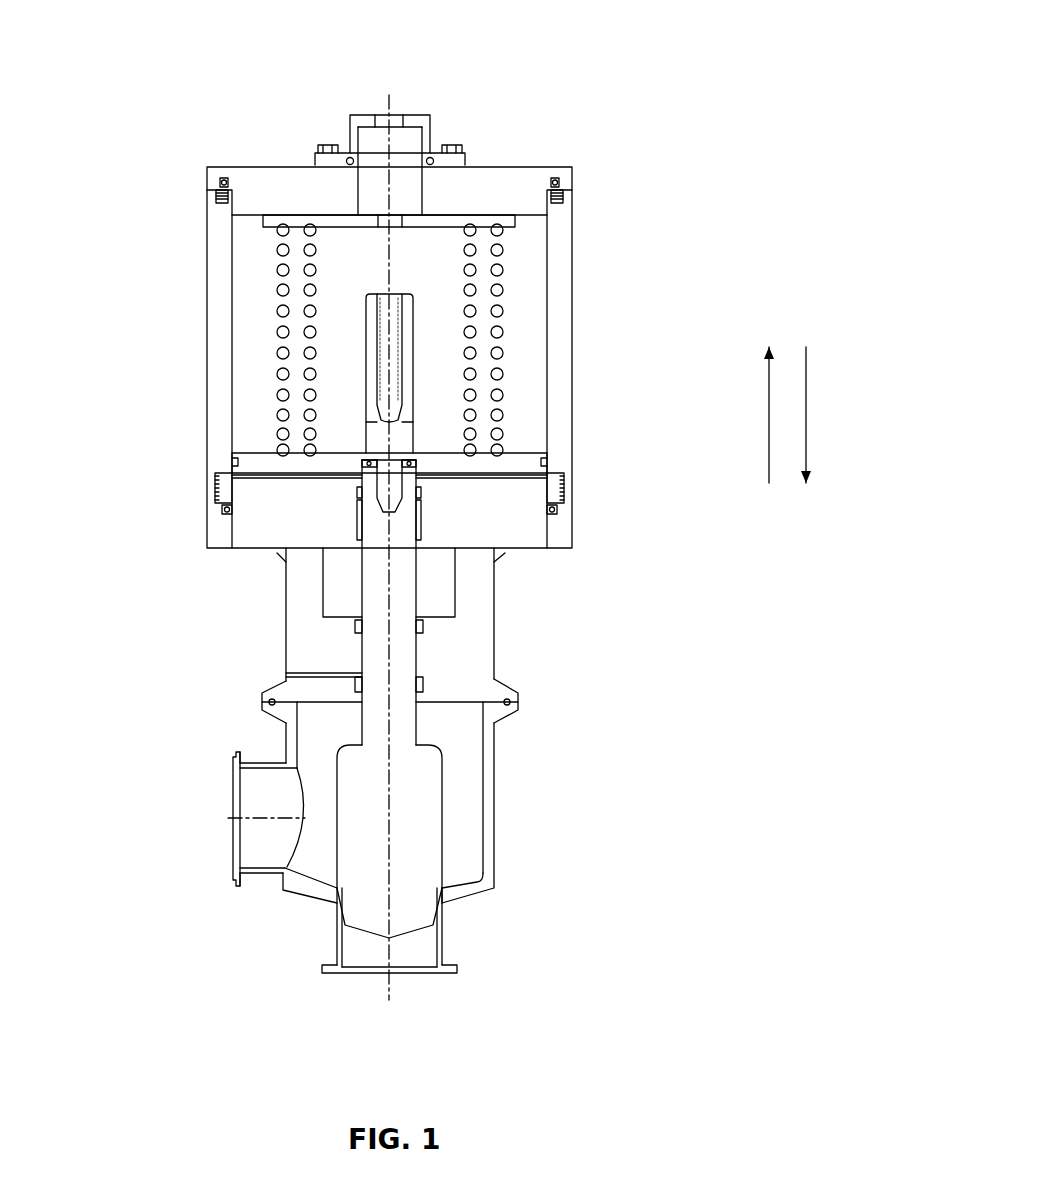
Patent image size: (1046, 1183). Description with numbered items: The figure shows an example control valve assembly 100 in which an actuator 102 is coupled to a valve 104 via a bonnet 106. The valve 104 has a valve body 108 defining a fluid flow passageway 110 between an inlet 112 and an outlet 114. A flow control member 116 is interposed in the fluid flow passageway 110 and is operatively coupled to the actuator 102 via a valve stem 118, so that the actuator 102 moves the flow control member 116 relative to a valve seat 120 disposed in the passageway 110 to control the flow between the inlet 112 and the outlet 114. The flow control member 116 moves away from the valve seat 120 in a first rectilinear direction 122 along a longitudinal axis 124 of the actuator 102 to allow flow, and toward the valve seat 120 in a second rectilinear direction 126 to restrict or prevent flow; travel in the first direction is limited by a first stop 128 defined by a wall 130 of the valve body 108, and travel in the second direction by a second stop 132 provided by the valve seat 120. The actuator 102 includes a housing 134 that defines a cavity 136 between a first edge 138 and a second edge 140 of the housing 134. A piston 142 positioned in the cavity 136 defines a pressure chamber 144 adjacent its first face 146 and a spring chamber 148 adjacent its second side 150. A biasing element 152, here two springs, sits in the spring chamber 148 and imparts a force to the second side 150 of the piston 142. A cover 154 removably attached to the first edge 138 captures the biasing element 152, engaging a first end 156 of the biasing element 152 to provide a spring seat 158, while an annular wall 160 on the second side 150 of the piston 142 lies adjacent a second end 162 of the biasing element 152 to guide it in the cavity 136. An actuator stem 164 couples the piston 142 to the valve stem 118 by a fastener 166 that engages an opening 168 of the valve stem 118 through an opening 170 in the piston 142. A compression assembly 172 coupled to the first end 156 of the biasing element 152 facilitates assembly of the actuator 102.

The control valve assembly 100 is at (587, 57).
The actuator 102 is at (155, 263).
The valve 104 is at (227, 720).
The bonnet 106 is at (286, 647).
The valve body 108 is at (494, 810).
The fluid flow passageway 110 is at (317, 850).
The inlet 112 is at (237, 850).
The outlet 114 is at (415, 975).
The flow control member 116 is at (443, 788).
The valve stem 118 is at (363, 587).
The valve seat 120 is at (335, 890).
The first rectilinear direction 122 is at (769, 405).
The longitudinal axis 124 is at (390, 153).
The second rectilinear direction 126 is at (806, 407).
The first stop 128 is at (438, 702).
The wall 130 is at (463, 702).
The second stop 132 is at (447, 900).
The housing 134 is at (223, 338).
The cavity 136 is at (258, 282).
The first edge 138 is at (565, 190).
The second edge 140 is at (560, 507).
The piston 142 is at (530, 468).
The pressure chamber 144 is at (260, 478).
The first face 146 is at (453, 475).
The spring chamber 148 is at (253, 373).
The second side 150 is at (470, 450).
The biasing element 152 is at (500, 262).
The cover 154 is at (523, 165).
The first end 156 is at (280, 233).
The spring seat 158 is at (310, 215).
The annular wall 160 is at (283, 432).
The second end 162 is at (273, 453).
The actuator stem 164 is at (415, 362).
The fastener 166 is at (385, 478).
The opening 168 is at (387, 480).
The opening 170 is at (417, 462).
The compression assembly 172 is at (420, 205).